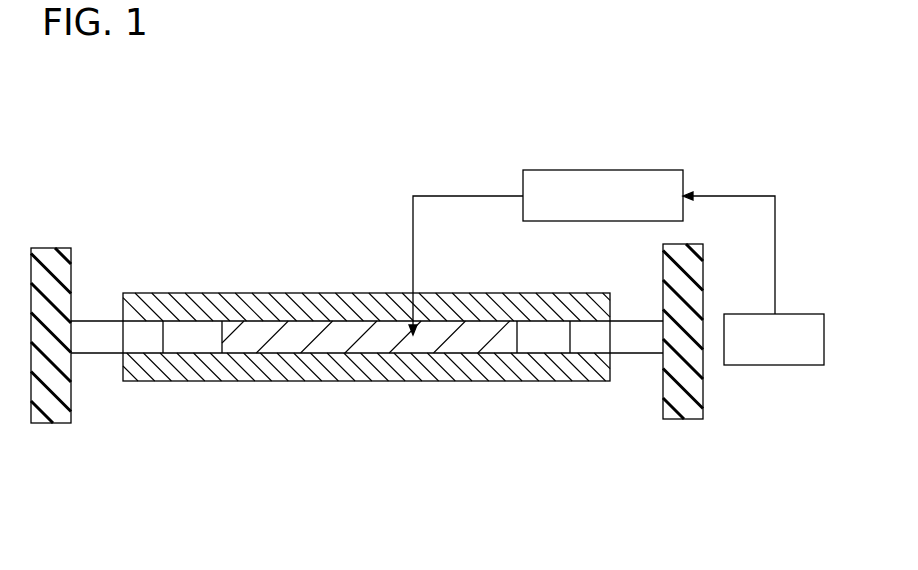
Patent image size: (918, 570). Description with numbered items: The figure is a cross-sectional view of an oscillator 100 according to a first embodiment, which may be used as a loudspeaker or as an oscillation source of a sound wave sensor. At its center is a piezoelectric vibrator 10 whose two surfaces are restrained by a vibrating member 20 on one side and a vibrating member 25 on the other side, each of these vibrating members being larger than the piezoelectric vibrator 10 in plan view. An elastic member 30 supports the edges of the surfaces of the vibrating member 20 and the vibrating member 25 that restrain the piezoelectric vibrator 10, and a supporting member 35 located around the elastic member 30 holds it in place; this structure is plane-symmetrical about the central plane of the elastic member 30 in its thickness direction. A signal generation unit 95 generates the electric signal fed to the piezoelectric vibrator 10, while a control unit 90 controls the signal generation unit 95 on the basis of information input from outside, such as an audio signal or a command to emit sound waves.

The piezoelectric vibrator 10 is at (308, 338).
The vibrating member 20 is at (457, 310).
The vibrating member 25 is at (550, 368).
The elastic member 30 is at (623, 337).
The supporting member 35 is at (58, 265).
The control unit 90 is at (733, 314).
The signal generation unit 95 is at (577, 170).
The oscillator 100 is at (753, 557).